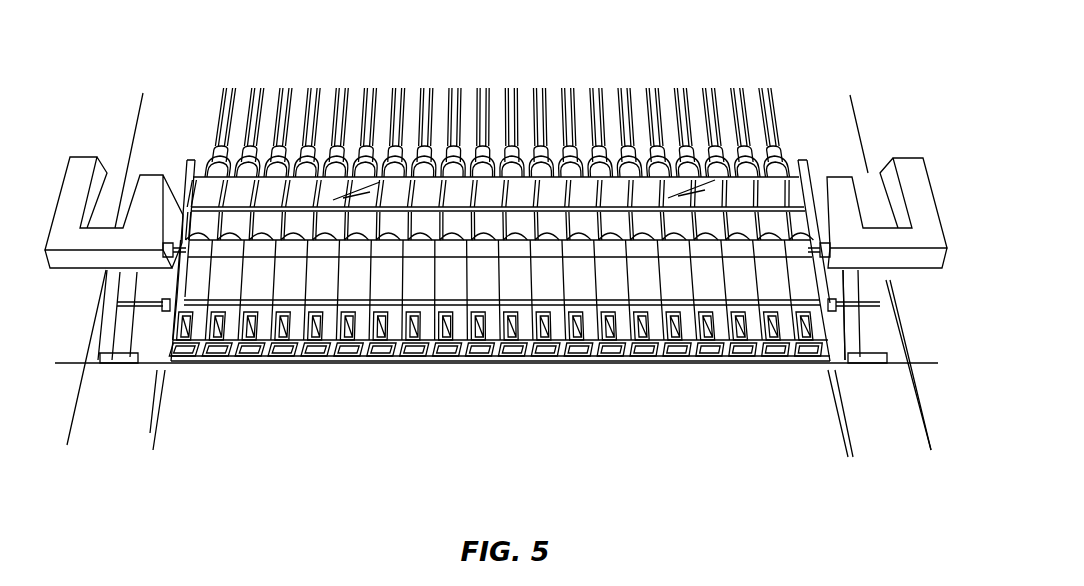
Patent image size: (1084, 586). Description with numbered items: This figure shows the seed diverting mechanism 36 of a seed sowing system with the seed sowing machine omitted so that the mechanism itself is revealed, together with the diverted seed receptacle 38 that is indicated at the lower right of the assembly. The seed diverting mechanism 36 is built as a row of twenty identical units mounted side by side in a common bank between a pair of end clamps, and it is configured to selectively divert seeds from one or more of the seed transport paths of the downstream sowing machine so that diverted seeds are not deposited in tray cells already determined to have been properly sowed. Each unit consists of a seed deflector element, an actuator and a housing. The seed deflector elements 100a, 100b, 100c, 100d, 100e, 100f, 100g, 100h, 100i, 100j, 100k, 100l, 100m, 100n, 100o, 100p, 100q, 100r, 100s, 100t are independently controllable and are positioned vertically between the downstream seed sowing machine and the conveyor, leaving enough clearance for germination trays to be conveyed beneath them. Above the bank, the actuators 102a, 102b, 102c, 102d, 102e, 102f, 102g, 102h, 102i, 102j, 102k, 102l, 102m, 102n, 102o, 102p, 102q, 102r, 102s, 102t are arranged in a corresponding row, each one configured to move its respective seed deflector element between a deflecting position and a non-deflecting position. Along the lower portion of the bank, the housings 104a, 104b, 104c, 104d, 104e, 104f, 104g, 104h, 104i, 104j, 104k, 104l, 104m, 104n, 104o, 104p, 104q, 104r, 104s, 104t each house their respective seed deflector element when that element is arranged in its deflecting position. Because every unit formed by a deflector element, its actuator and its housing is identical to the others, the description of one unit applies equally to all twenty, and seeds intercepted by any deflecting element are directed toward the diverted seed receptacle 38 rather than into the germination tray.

The seed diverting mechanism 36 is at (183, 279).
The diverted seed receptacle 38 is at (843, 384).
The seed deflector element 100a is at (821, 352).
The seed deflector element 100b is at (788, 352).
The seed deflector element 100c is at (755, 352).
The seed deflector element 100d is at (722, 352).
The seed deflector element 100e is at (689, 352).
The seed deflector element 100f is at (656, 352).
The seed deflector element 100g is at (623, 352).
The seed deflector element 100h is at (590, 352).
The seed deflector element 100i is at (558, 352).
The seed deflector element 100j is at (525, 352).
The seed deflector element 100k is at (492, 352).
The seed deflector element 100l is at (459, 352).
The seed deflector element 100m is at (426, 352).
The seed deflector element 100n is at (393, 352).
The seed deflector element 100o is at (360, 352).
The seed deflector element 100p is at (328, 352).
The seed deflector element 100q is at (295, 352).
The seed deflector element 100r is at (262, 352).
The seed deflector element 100s is at (229, 352).
The seed deflector element 100t is at (196, 352).
The actuator 102a is at (774, 160).
The actuator 102b is at (744, 160).
The actuator 102c is at (714, 160).
The actuator 102d is at (685, 160).
The actuator 102e is at (656, 160).
The actuator 102f is at (626, 160).
The actuator 102g is at (596, 160).
The actuator 102h is at (567, 160).
The actuator 102i is at (538, 160).
The actuator 102j is at (508, 160).
The actuator 102k is at (478, 160).
The actuator 102l is at (449, 160).
The actuator 102m is at (420, 160).
The actuator 102n is at (390, 160).
The actuator 102o is at (360, 160).
The actuator 102p is at (331, 160).
The actuator 102q is at (302, 160).
The actuator 102r is at (272, 160).
The actuator 102s is at (242, 160).
The actuator 102t is at (213, 160).
The housing 104a is at (822, 364).
The housing 104b is at (793, 364).
The housing 104c is at (760, 364).
The housing 104d is at (727, 364).
The housing 104e is at (698, 364).
The housing 104f is at (665, 364).
The housing 104g is at (630, 364).
The housing 104h is at (598, 364).
The housing 104i is at (565, 364).
The housing 104j is at (528, 364).
The housing 104k is at (467, 364).
The housing 104l is at (428, 364).
The housing 104m is at (397, 364).
The housing 104n is at (363, 364).
The housing 104o is at (328, 364).
The housing 104p is at (297, 364).
The housing 104q is at (265, 364).
The housing 104r is at (235, 364).
The housing 104s is at (205, 364).
The housing 104t is at (173, 364).